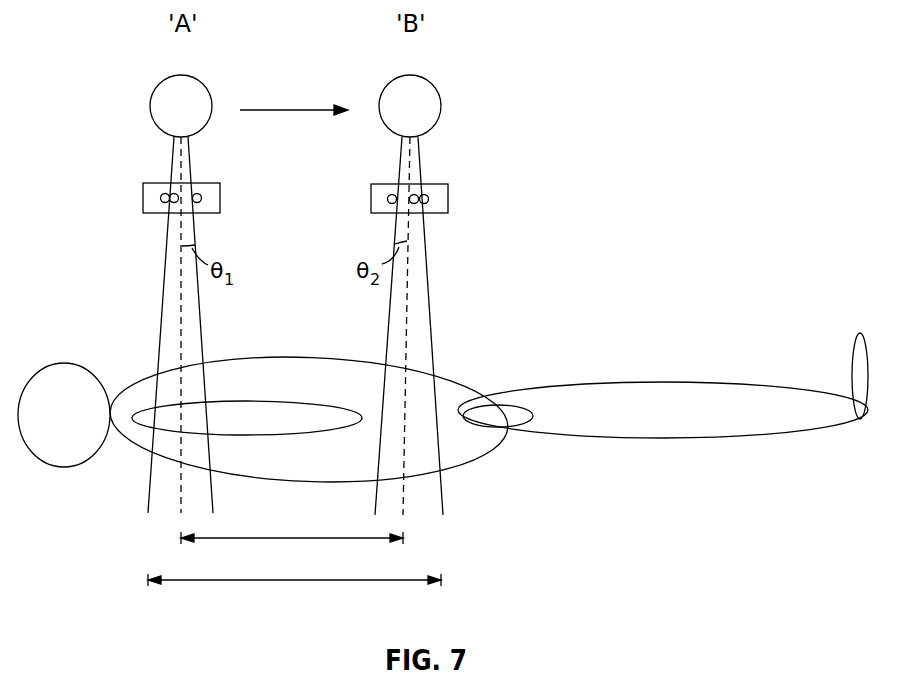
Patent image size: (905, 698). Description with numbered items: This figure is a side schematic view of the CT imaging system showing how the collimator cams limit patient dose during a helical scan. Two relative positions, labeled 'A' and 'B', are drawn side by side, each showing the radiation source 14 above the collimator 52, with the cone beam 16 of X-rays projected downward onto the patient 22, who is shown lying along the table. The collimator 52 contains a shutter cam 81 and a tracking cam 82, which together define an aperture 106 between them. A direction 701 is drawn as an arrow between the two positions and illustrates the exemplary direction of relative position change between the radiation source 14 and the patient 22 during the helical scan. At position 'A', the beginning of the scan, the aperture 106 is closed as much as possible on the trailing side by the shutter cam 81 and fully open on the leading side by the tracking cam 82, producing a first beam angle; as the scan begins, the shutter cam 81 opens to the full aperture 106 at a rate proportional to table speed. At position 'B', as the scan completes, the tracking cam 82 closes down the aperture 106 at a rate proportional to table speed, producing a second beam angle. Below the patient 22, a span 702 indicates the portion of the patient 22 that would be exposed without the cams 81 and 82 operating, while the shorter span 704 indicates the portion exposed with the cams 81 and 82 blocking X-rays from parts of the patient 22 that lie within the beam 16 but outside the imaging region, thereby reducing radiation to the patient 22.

The radiation source 14 is at (181, 75).
The cone beam 16 is at (212, 295).
The patient 22 is at (455, 379).
The collimator 52 is at (220, 200).
The shutter cam 81 is at (167, 193).
The tracking cam 82 is at (199, 193).
The aperture 106 is at (177, 203).
The direction 701 is at (300, 106).
The span 702 is at (297, 582).
The span 704 is at (301, 540).